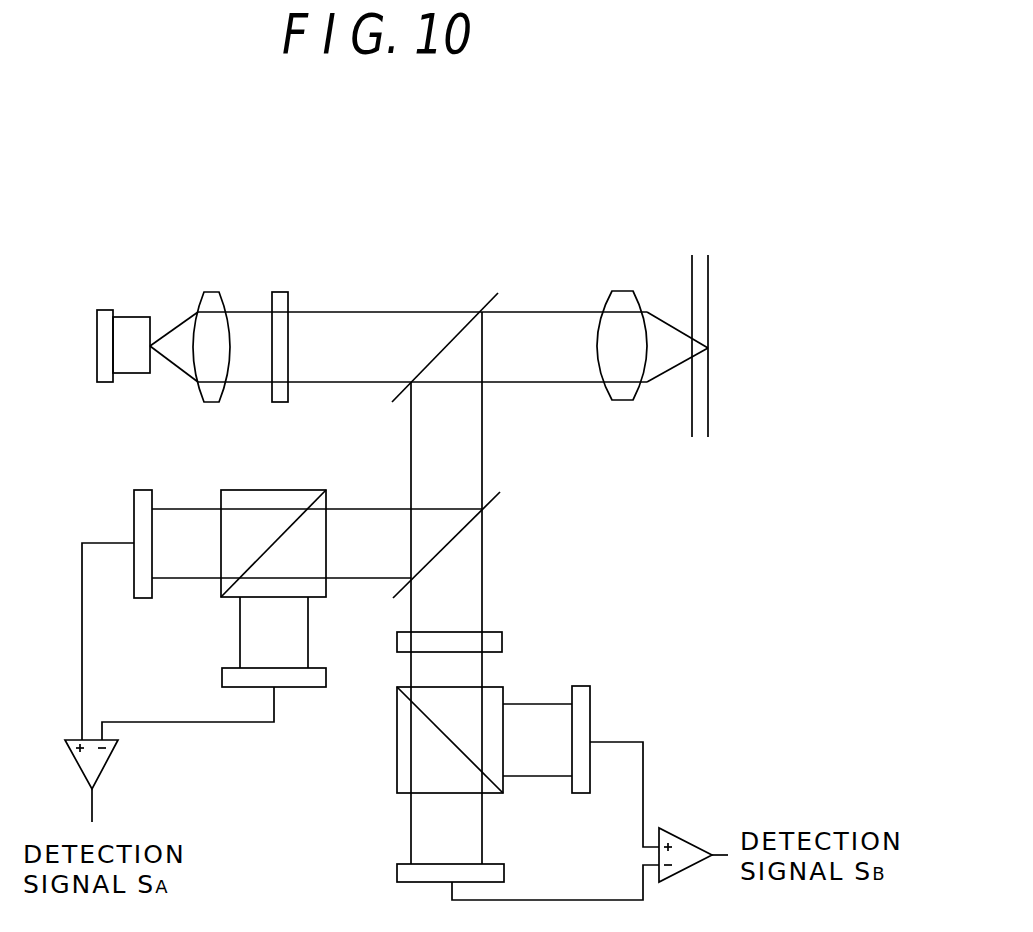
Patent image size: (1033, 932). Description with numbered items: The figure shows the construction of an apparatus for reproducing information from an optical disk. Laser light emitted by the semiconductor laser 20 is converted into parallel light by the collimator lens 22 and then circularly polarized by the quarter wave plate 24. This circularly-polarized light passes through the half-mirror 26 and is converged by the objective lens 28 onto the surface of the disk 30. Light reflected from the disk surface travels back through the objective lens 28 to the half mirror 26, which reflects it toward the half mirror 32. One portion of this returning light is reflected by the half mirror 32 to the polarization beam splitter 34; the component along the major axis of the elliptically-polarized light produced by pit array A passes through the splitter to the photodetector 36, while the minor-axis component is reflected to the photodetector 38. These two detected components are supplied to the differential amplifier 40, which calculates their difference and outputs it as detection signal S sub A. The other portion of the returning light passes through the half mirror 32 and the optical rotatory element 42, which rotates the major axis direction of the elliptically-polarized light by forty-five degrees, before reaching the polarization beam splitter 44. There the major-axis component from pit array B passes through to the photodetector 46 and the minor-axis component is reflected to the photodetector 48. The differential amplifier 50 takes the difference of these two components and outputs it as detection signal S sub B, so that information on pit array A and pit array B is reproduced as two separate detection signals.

The semiconductor laser 20 is at (97, 347).
The collimator lens 22 is at (200, 307).
The ¼ wave plate 24 is at (272, 393).
The half-mirror 26 is at (442, 348).
The objective lens 28 is at (598, 328).
The disk 30 is at (690, 413).
The half mirror 32 is at (493, 502).
The polarization beam splitter 34 is at (221, 495).
The photodetector 36 is at (134, 573).
The photodetector 38 is at (222, 675).
The differential amplifier 40 is at (100, 775).
The optical rotatory element 42 is at (493, 632).
The polarization beam splitter 44 is at (398, 720).
The photodetector 46 is at (398, 875).
The photodetector 48 is at (570, 785).
The differential amplifier 50 is at (670, 830).